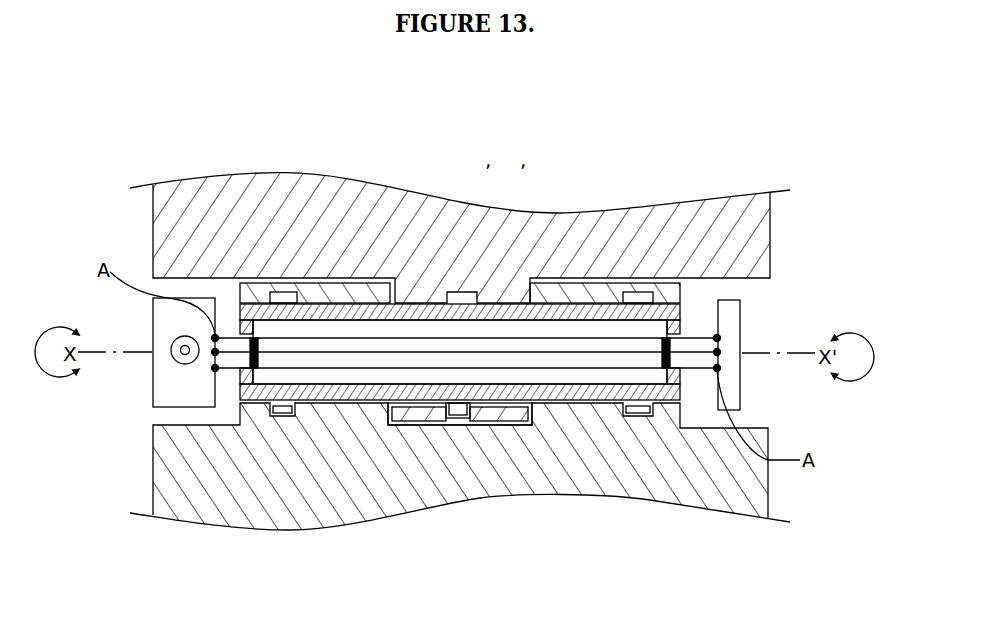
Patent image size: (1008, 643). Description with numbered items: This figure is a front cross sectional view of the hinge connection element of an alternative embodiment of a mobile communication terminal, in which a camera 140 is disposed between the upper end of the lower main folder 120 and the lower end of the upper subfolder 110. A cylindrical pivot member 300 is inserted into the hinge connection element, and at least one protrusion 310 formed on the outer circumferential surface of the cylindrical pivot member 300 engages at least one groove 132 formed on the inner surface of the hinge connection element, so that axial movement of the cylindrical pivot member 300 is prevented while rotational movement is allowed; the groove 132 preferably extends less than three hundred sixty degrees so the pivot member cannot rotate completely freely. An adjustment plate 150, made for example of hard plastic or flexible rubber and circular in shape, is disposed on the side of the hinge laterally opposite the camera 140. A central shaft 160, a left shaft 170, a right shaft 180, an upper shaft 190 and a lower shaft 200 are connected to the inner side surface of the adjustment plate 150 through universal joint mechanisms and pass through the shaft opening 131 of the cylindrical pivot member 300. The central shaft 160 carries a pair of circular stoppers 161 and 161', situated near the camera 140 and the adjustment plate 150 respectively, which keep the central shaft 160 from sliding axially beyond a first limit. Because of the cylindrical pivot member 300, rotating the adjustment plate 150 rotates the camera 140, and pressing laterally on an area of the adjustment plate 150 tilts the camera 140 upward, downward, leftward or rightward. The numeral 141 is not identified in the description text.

The upper subfolder 110 is at (750, 243).
The lower main folder 120 is at (750, 495).
The shaft opening 131 is at (688, 345).
The vertical groove 132 is at (285, 415).
The camera 140 is at (160, 318).
The support hole 141 is at (185, 358).
The adjustment plate 150 is at (733, 403).
The central shaft 160 is at (437, 355).
The left shaft 170 is at (585, 225).
The right shaft 180 is at (460, 266).
The circular stopper 161 is at (180, 288).
The circular stopper 161' is at (749, 317).
The upper shaft 190 is at (408, 335).
The lower shaft 200 is at (465, 370).
The cylindrical pivot member 300 is at (562, 402).
The protrusion 310 is at (297, 415).